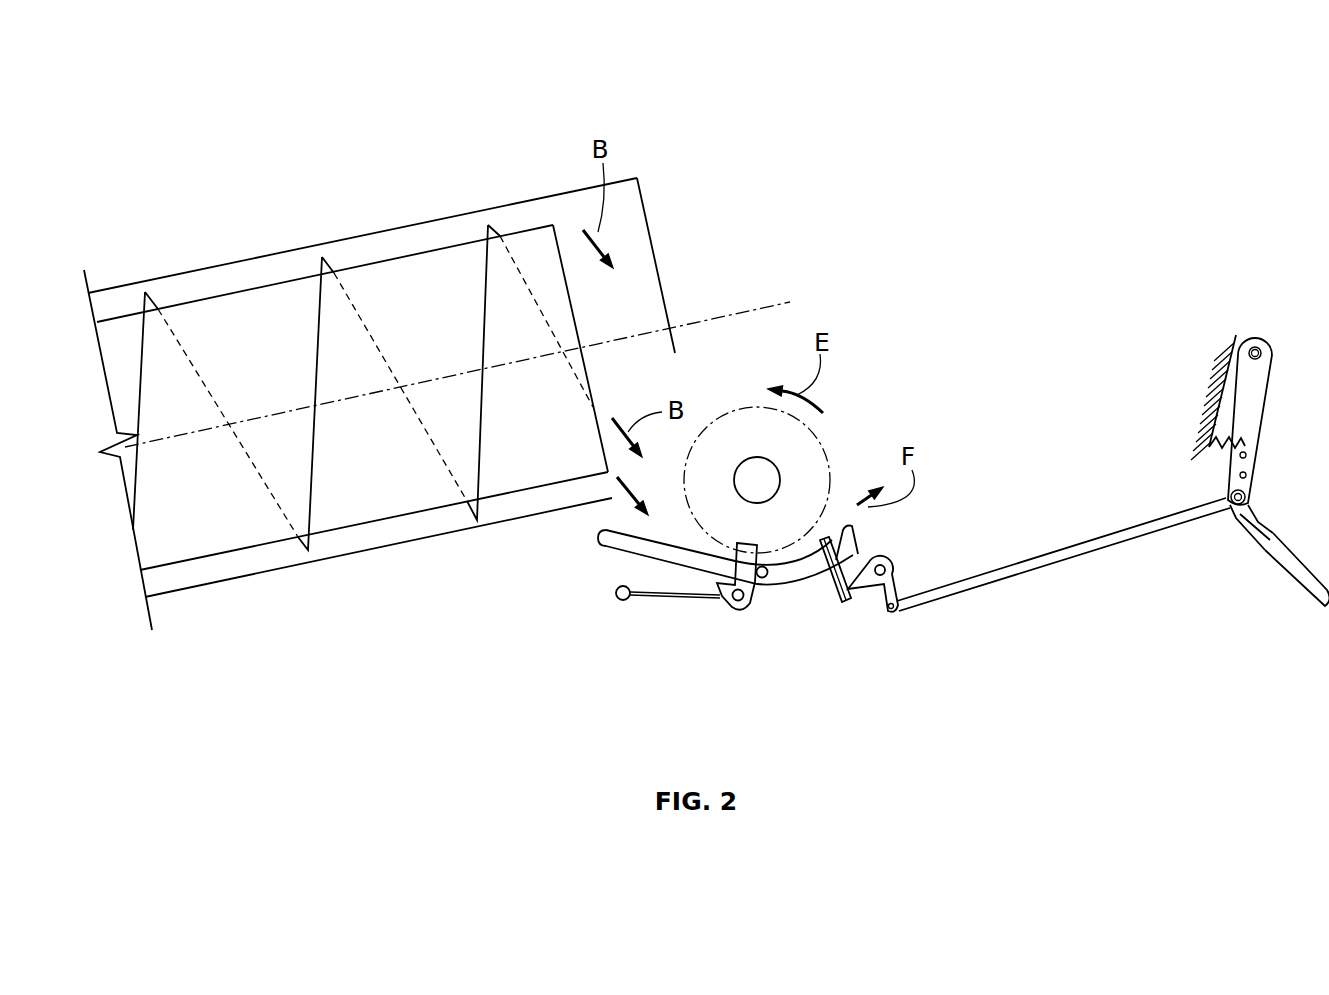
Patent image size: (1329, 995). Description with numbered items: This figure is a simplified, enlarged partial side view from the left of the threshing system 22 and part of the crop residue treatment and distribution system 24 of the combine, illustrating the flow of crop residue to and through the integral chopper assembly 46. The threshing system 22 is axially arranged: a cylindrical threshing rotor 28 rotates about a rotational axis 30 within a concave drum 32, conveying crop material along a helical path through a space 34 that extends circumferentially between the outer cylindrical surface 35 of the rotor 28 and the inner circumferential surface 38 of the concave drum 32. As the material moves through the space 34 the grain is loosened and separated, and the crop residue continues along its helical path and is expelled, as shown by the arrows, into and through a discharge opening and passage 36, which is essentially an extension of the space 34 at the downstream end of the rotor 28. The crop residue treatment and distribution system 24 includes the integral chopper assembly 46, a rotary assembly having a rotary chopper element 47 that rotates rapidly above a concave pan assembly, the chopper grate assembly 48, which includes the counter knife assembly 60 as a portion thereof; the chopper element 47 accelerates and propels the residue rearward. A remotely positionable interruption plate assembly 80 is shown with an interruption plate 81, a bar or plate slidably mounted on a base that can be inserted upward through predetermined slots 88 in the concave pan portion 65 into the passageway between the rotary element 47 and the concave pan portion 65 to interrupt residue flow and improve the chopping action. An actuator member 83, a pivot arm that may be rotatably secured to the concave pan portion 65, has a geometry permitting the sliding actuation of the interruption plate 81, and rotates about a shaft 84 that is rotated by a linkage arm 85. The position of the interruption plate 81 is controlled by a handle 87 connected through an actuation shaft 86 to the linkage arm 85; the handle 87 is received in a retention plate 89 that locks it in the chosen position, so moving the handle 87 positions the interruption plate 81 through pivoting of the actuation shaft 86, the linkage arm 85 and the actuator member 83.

The threshing system 22 is at (650, 187).
The crop residue treatment and distribution system 24 is at (872, 386).
The threshing rotor 28 is at (530, 228).
The rotational axis 30 is at (168, 433).
The concave drum 32 is at (157, 280).
The space 34 is at (407, 237).
The outer cylindrical surface 35 is at (238, 290).
The discharge opening and passage 36 is at (658, 307).
The inner circumferential surface 38 is at (199, 581).
The integral chopper assembly 46 is at (852, 520).
The rotary chopper element 47 is at (838, 452).
The chopper grate assembly 48 is at (618, 560).
The counter knife assembly 60 is at (718, 590).
The concave pan portion 65 is at (789, 604).
The remotely positionable interruption plate assembly 80 is at (1066, 585).
The interruption plate 81 is at (847, 600).
The actuator member 83 is at (867, 577).
The shaft 84 is at (889, 574).
The linkage arm 85 is at (893, 612).
The actuation shaft 86 is at (1108, 533).
The handle 87 is at (1283, 550).
The slots 88 is at (838, 524).
The retention plate 89 is at (1260, 440).